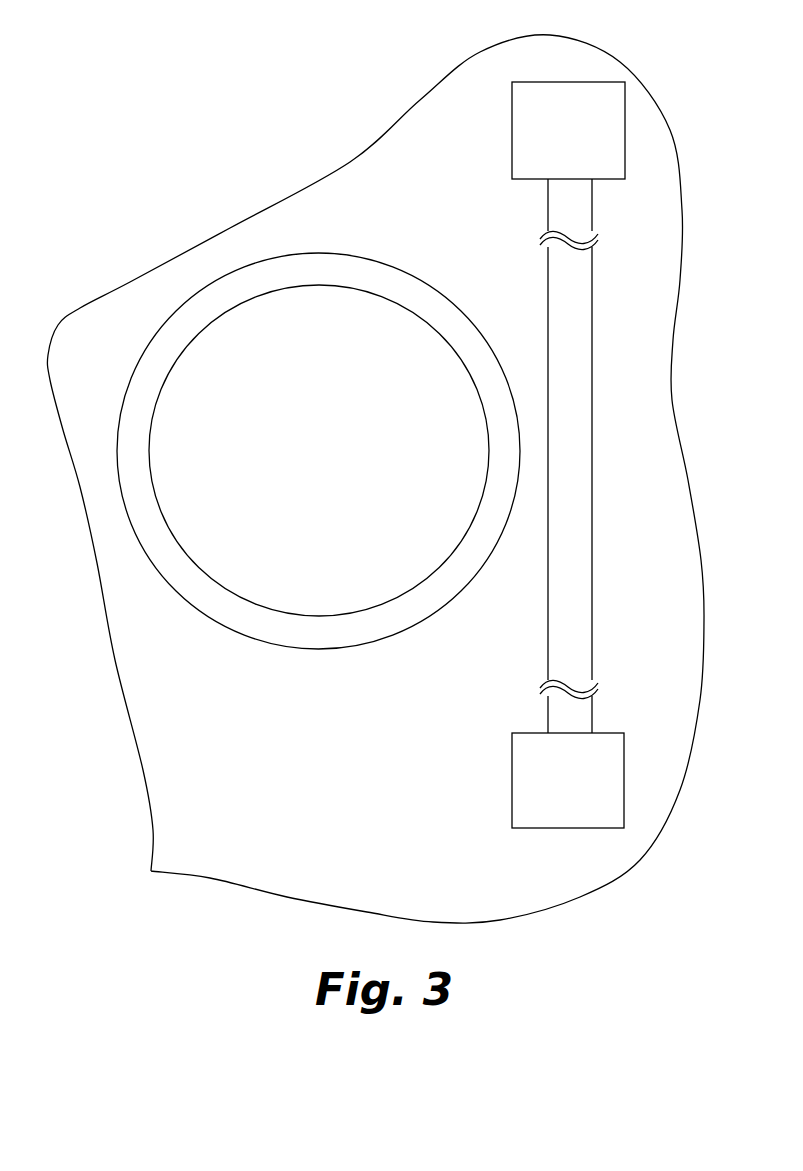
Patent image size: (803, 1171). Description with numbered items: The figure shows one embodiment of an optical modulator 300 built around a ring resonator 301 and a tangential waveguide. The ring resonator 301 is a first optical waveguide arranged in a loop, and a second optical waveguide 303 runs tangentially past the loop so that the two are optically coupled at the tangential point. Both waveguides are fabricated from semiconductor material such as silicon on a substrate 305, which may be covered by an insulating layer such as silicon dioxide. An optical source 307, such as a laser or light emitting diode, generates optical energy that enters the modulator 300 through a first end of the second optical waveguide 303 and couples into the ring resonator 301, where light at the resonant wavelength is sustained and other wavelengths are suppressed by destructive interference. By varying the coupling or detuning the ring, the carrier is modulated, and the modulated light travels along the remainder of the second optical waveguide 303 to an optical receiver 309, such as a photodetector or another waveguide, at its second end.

The optical modulator 300 is at (128, 178).
The ring resonator 301 is at (145, 393).
The second optical waveguide 303 is at (573, 268).
The substrate 305 is at (428, 174).
The optical source 307 is at (617, 822).
The optical receiver 309 is at (617, 174).